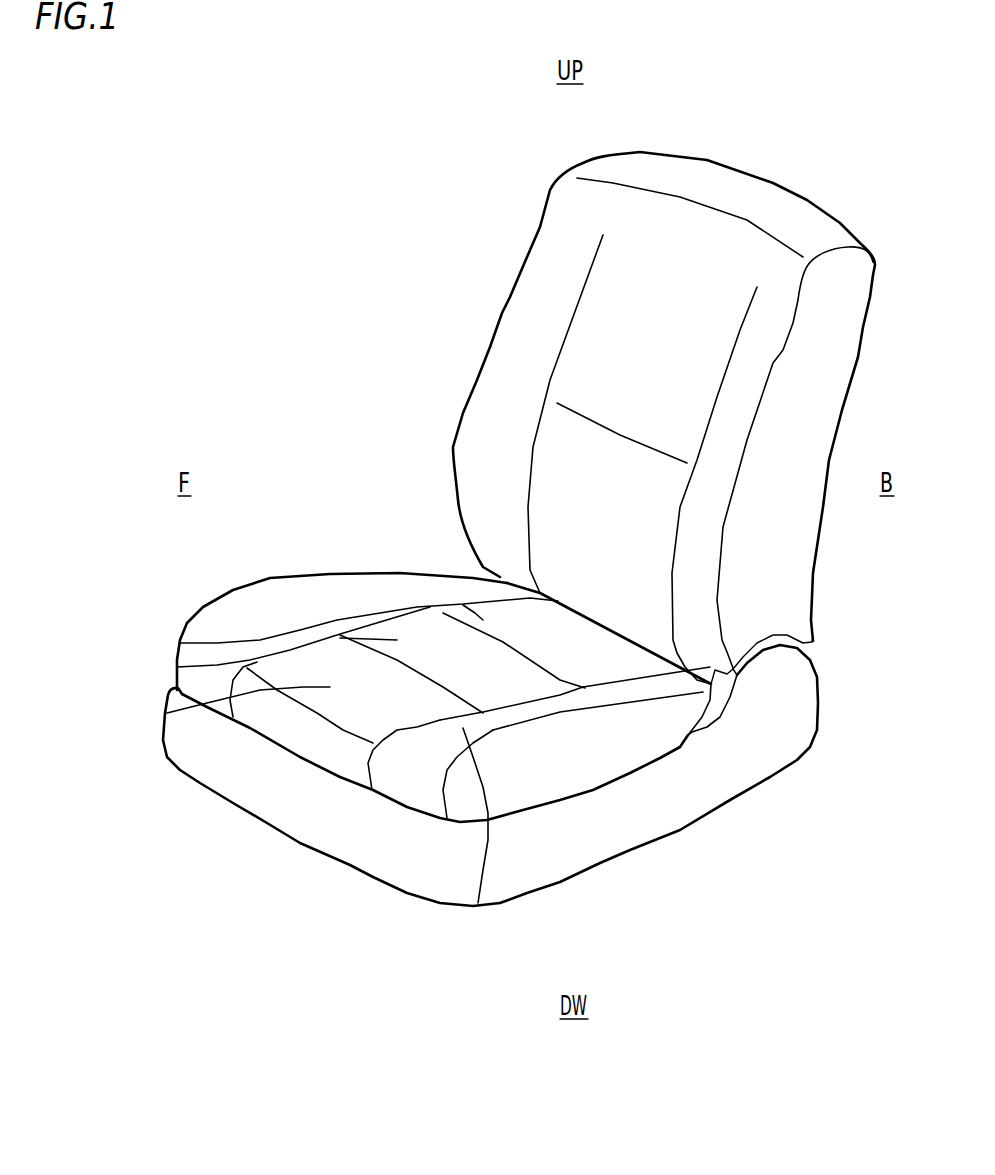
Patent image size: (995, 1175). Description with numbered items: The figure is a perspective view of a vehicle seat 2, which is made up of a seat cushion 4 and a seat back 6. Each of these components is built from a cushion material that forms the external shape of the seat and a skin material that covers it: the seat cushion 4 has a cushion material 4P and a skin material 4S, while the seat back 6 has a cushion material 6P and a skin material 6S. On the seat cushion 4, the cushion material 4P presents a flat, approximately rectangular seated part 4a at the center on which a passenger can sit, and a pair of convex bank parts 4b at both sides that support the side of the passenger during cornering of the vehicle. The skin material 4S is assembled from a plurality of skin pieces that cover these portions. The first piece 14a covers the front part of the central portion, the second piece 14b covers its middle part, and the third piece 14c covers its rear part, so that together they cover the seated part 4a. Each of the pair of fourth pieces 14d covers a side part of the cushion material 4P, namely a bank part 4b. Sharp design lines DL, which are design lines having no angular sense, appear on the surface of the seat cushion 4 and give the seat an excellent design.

The vehicle seat 2 is at (797, 160).
The seat cushion 4 is at (298, 573).
The cushion material 4P is at (490, 739).
The skin material 4S is at (82, 597).
The seated part 4a is at (464, 673).
The bank part 4b is at (288, 620).
The seat back 6 is at (502, 313).
The skin material 6S is at (665, 431).
The cushion material 6P is at (664, 410).
The first piece 14a is at (170, 710).
The second piece 14b is at (177, 674).
The third piece 14c is at (180, 644).
The fourth piece 14d is at (223, 621).
The design line DL is at (503, 643).